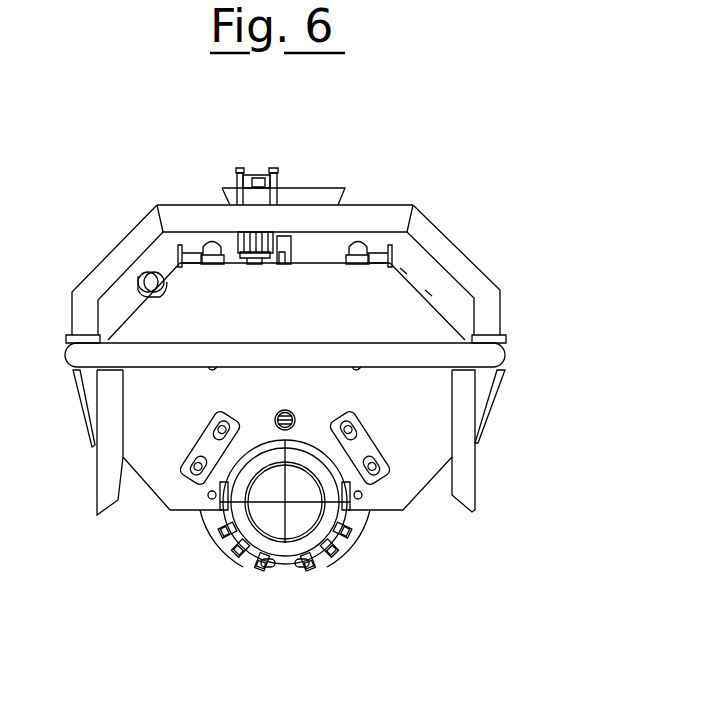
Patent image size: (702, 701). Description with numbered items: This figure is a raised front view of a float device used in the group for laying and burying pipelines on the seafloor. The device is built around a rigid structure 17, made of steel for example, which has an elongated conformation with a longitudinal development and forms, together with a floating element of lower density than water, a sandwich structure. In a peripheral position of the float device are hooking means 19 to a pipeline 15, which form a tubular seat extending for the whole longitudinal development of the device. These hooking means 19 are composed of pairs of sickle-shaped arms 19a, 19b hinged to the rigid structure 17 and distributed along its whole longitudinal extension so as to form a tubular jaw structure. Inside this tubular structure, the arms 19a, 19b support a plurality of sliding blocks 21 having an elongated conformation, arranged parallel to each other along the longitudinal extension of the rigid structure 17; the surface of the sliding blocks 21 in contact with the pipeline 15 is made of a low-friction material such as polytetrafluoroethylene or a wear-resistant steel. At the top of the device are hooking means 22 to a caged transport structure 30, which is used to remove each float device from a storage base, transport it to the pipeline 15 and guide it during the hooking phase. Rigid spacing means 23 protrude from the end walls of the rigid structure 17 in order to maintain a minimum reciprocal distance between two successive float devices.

The pipeline 15 is at (277, 543).
The rigid structure 17 is at (157, 463).
The hooking means 19 is at (197, 615).
The sickle-shaped arm 19a is at (218, 517).
The sickle-shaped arm 19b is at (357, 518).
The sliding block 21 is at (264, 543).
The hooking means 22 is at (205, 188).
The rigid spacing means 23 is at (207, 448).
The caged transport structure 30 is at (358, 222).